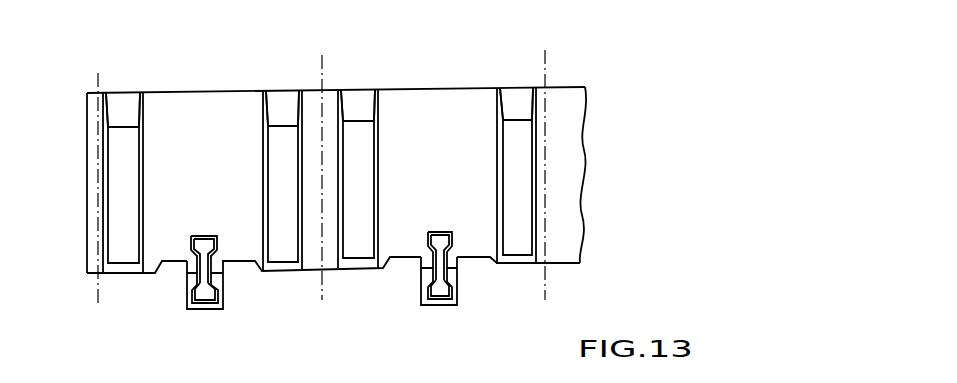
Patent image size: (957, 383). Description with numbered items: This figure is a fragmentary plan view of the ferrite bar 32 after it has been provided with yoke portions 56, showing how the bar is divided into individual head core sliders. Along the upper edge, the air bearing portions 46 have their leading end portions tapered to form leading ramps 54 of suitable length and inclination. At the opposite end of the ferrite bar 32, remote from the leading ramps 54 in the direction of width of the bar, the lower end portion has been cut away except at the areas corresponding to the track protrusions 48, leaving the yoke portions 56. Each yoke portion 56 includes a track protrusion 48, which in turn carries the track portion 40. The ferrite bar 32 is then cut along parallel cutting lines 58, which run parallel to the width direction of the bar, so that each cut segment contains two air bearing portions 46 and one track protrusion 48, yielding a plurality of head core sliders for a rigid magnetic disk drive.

The ferrite bar 32 is at (445, 68).
The track portion 40 is at (204, 306).
The air bearing portions 46 is at (112, 150).
The track protrusion 48 is at (206, 233).
The leading ramps 54 is at (124, 100).
The yoke portions 56 is at (182, 300).
The cutting lines 58 is at (98, 292).